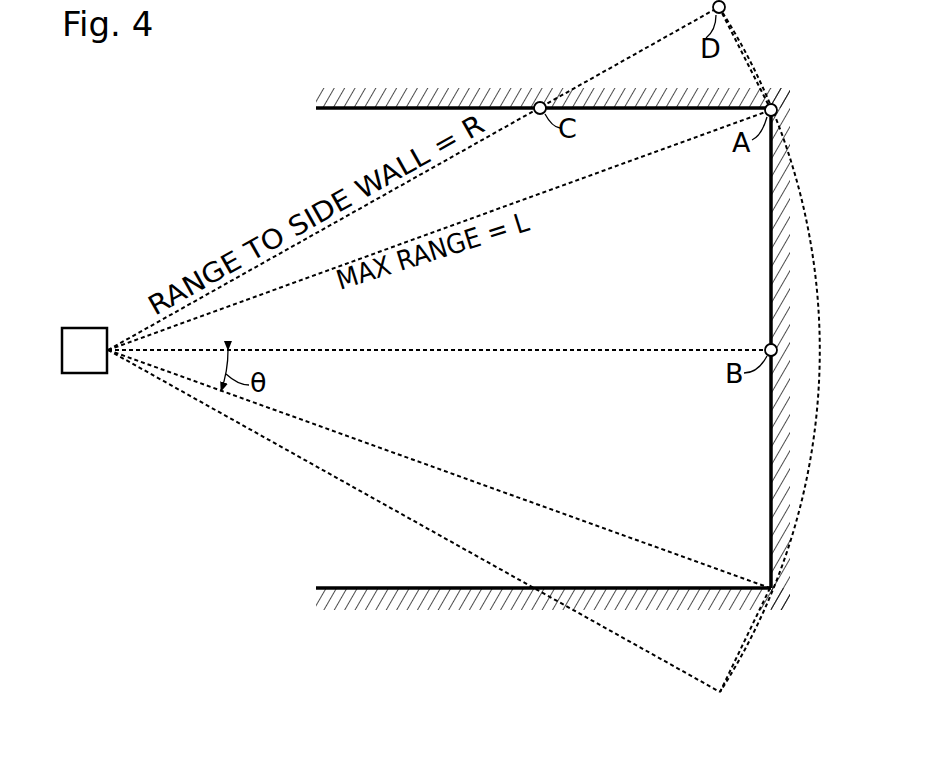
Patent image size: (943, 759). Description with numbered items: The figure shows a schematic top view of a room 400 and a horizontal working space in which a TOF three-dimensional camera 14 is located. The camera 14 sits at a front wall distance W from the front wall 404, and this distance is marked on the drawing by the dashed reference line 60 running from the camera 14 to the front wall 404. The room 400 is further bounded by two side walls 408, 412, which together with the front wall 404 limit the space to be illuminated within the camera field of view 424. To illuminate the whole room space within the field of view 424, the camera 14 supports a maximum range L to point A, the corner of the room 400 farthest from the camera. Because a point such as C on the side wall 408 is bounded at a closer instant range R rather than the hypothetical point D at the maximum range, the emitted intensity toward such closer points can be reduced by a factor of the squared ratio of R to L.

The room 400 is at (156, 167).
The camera 14 is at (99, 365).
The camera field of view 424 is at (112, 295).
The front wall distance line 60 is at (507, 353).
The side wall 408 is at (490, 106).
The side wall 412 is at (478, 626).
The front wall 404 is at (769, 287).